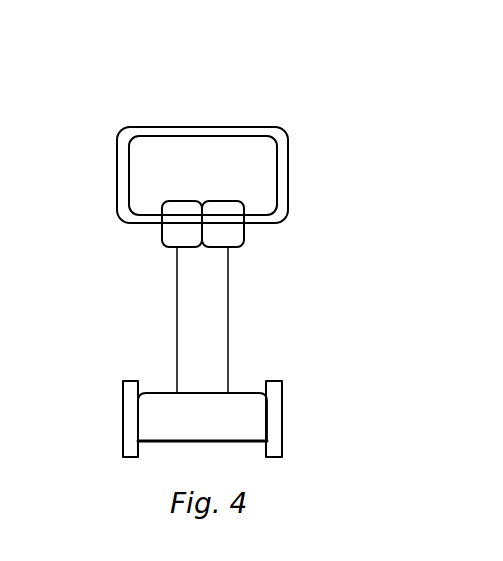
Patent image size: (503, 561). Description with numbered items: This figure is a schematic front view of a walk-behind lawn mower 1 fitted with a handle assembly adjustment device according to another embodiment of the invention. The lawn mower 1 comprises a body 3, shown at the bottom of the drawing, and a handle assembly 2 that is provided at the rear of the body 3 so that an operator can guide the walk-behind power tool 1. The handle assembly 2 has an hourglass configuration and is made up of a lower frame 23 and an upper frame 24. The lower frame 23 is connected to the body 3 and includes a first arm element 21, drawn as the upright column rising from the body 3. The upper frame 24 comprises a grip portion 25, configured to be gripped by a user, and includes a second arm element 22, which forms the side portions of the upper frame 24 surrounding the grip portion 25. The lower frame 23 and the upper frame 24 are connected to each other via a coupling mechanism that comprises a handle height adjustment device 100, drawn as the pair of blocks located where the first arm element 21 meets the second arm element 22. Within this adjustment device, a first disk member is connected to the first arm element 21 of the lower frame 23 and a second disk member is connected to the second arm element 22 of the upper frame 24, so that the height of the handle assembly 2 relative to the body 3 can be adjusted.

The walk-behind lawn mower 1 is at (98, 85).
The handle assembly 2 is at (308, 133).
The body 3 is at (202, 419).
The first arm element 21 is at (200, 297).
The second arm element 22 is at (117, 192).
The lower frame 23 is at (83, 228).
The upper frame 24 is at (83, 128).
The grip portion 25 is at (182, 127).
The handle height adjustment device 100 is at (162, 236).